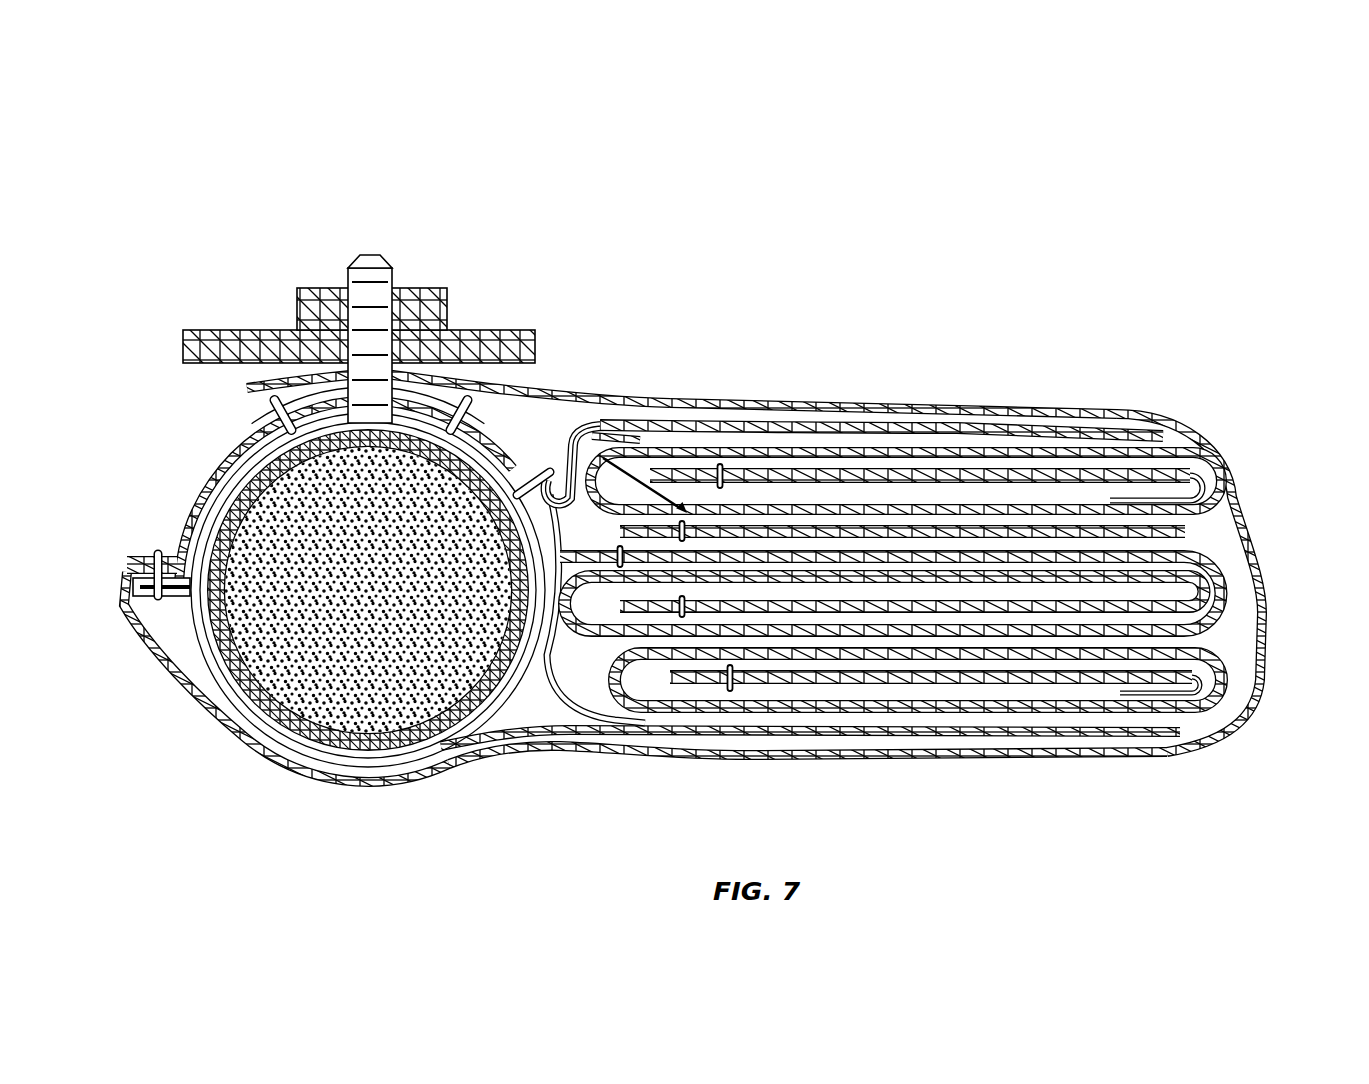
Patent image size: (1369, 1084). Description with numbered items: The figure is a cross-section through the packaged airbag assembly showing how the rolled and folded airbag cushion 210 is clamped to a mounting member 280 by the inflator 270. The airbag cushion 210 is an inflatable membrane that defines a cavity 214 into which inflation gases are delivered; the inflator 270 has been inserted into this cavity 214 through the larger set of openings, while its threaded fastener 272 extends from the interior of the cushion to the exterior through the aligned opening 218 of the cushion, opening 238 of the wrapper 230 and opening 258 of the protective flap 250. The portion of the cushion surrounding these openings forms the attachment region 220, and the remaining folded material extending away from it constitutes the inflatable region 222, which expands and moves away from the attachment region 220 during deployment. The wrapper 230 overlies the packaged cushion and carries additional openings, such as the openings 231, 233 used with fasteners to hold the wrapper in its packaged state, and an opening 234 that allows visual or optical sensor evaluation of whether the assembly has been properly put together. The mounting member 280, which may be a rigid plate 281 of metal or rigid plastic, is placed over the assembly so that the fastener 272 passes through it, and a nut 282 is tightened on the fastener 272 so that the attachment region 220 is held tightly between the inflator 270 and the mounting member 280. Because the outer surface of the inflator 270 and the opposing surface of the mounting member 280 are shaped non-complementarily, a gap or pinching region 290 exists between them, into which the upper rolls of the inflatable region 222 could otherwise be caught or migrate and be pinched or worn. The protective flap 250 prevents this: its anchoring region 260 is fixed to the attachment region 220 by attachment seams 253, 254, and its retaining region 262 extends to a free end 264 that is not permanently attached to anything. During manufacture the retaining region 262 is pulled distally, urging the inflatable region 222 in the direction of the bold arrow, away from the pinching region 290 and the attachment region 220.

The airbag cushion 210 is at (305, 757).
The cavity 214 is at (510, 695).
The opening 218 is at (376, 270).
The opening 238 is at (376, 270).
The opening 258 is at (376, 270).
The opening 231 is at (376, 270).
The opening 233 is at (347, 327).
The attachment region 220 is at (537, 420).
The inflatable region 222 is at (1232, 553).
The wrapper 230 is at (660, 755).
The opening 234 is at (1085, 393).
The protective flap 250 is at (945, 412).
The attachment seam 253 is at (455, 400).
The attachment seam 254 is at (557, 470).
The anchoring region 260 is at (548, 455).
The retaining region 262 is at (1015, 408).
The free end 264 is at (1190, 418).
The inflator 270 is at (220, 720).
The fastener 272 is at (376, 270).
The mounting member 280 is at (339, 270).
The rigid plate 281 is at (230, 343).
The nut 282 is at (428, 305).
The pinching region 290 is at (463, 387).